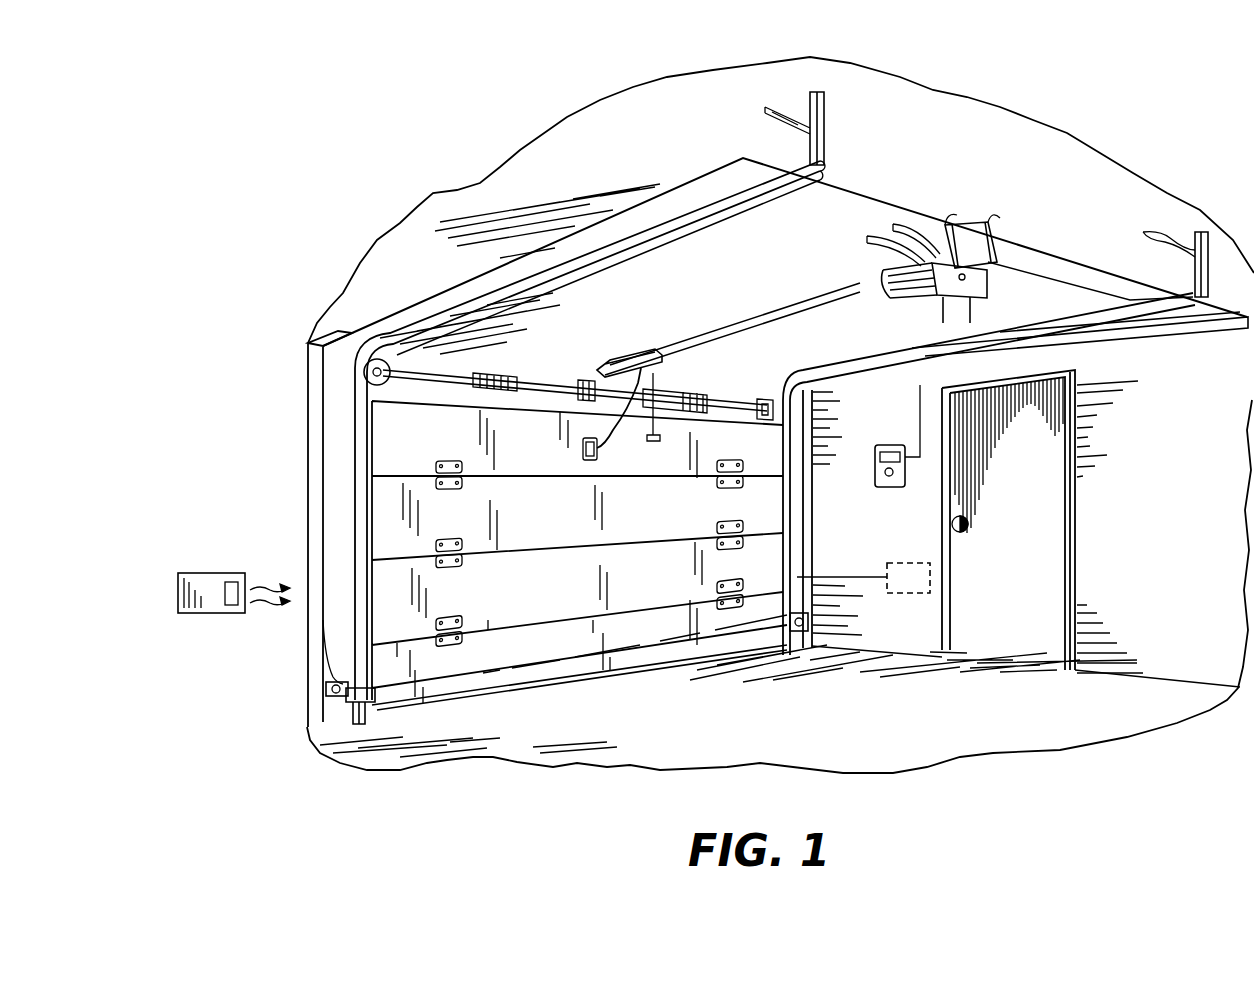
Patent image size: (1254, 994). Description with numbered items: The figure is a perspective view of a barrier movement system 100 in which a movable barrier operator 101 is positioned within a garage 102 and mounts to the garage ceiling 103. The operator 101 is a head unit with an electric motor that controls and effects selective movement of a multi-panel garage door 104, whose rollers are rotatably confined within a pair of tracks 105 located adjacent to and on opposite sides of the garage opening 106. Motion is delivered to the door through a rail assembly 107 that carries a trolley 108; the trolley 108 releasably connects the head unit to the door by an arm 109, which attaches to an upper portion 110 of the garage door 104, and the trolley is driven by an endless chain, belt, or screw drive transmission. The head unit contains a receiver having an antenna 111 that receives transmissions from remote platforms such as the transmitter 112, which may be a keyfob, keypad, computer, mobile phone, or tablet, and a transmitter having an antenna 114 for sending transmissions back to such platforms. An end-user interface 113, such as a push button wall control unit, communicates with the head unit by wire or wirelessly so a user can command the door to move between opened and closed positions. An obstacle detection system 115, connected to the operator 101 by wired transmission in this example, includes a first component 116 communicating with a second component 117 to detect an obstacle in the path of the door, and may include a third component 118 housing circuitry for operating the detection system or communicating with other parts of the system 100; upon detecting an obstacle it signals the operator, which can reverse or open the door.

The barrier movement system 100 is at (398, 150).
The movable barrier operator 101 is at (900, 302).
The garage 102 is at (308, 350).
The garage ceiling 103 is at (1073, 168).
The multi-panel garage door 104 is at (623, 640).
The tracks 105 is at (787, 567).
The garage opening 106 is at (740, 635).
The rail assembly 107 is at (727, 330).
The trolley 108 is at (693, 370).
The arm 109 is at (626, 441).
The upper portion 110 is at (538, 462).
The antenna 111 is at (975, 312).
The transmitter 112 is at (213, 606).
The end-user interface 113 is at (906, 487).
The antenna 114 is at (945, 318).
The obstacle detection system 115 is at (335, 704).
The first component 116 is at (368, 695).
The second component 117 is at (806, 634).
The third component 118 is at (900, 595).